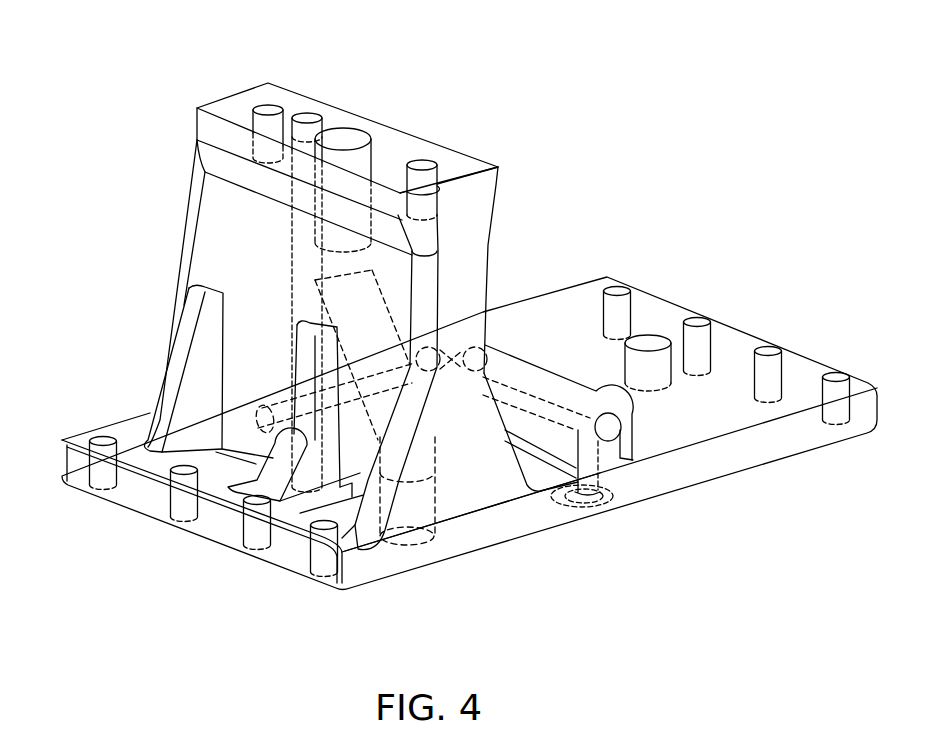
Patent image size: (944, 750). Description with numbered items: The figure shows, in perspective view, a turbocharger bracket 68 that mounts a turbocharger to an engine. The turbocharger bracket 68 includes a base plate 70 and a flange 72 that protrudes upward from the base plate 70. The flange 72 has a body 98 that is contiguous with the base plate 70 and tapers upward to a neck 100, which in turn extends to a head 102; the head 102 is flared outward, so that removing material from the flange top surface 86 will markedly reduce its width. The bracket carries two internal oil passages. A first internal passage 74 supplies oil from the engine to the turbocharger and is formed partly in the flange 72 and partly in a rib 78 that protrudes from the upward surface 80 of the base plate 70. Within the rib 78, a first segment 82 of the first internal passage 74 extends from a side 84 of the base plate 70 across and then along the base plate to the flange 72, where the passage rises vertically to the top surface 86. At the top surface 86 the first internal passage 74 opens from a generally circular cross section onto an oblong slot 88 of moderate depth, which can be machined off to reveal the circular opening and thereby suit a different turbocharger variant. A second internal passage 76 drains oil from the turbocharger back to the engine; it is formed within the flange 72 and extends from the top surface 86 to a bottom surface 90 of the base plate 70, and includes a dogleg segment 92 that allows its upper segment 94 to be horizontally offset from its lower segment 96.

The turbocharger bracket 68 is at (748, 279).
The base plate 70 is at (543, 295).
The flange 72 is at (359, 169).
The first internal passage 74 is at (312, 118).
The second internal passage 76 is at (368, 127).
The rib 78 is at (636, 401).
The upward surface 80 is at (601, 365).
The first segment 82 is at (553, 412).
The side 84 is at (185, 240).
The top surface 86 is at (413, 160).
The oblong slot 88 is at (290, 105).
The bottom surface 90 is at (457, 557).
The dogleg segment 92 is at (348, 363).
The upper segment 94 is at (318, 208).
The lower segment 96 is at (423, 505).
The body 98 is at (484, 445).
The neck 100 is at (453, 298).
The head 102 is at (482, 225).